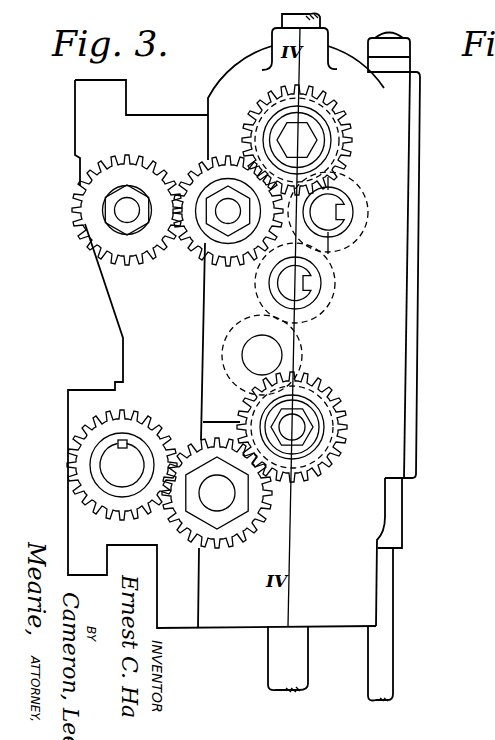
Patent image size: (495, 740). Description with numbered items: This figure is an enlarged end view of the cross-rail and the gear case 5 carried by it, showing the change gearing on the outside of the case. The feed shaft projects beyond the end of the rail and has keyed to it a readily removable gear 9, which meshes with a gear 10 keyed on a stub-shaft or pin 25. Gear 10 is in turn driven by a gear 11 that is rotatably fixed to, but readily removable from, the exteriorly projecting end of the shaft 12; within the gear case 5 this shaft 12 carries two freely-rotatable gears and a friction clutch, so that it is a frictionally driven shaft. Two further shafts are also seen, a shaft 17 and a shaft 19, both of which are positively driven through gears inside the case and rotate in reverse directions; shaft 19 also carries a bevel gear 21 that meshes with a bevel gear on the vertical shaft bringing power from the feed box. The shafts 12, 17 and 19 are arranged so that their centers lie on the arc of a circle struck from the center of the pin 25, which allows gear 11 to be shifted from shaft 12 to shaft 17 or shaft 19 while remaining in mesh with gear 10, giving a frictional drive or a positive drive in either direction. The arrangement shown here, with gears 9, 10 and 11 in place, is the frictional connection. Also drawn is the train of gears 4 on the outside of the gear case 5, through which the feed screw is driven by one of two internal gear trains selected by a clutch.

The train of gears 4 is at (156, 440).
The gear case 5 is at (396, 358).
The gear 9 is at (128, 242).
The gear 10 is at (237, 248).
The gear 11 is at (341, 148).
The shaft 12 is at (310, 137).
The shaft 17 is at (333, 211).
The shaft 19 is at (299, 290).
The bevel gear 21 is at (125, 212).
The stub-shaft or pin 25 is at (224, 214).